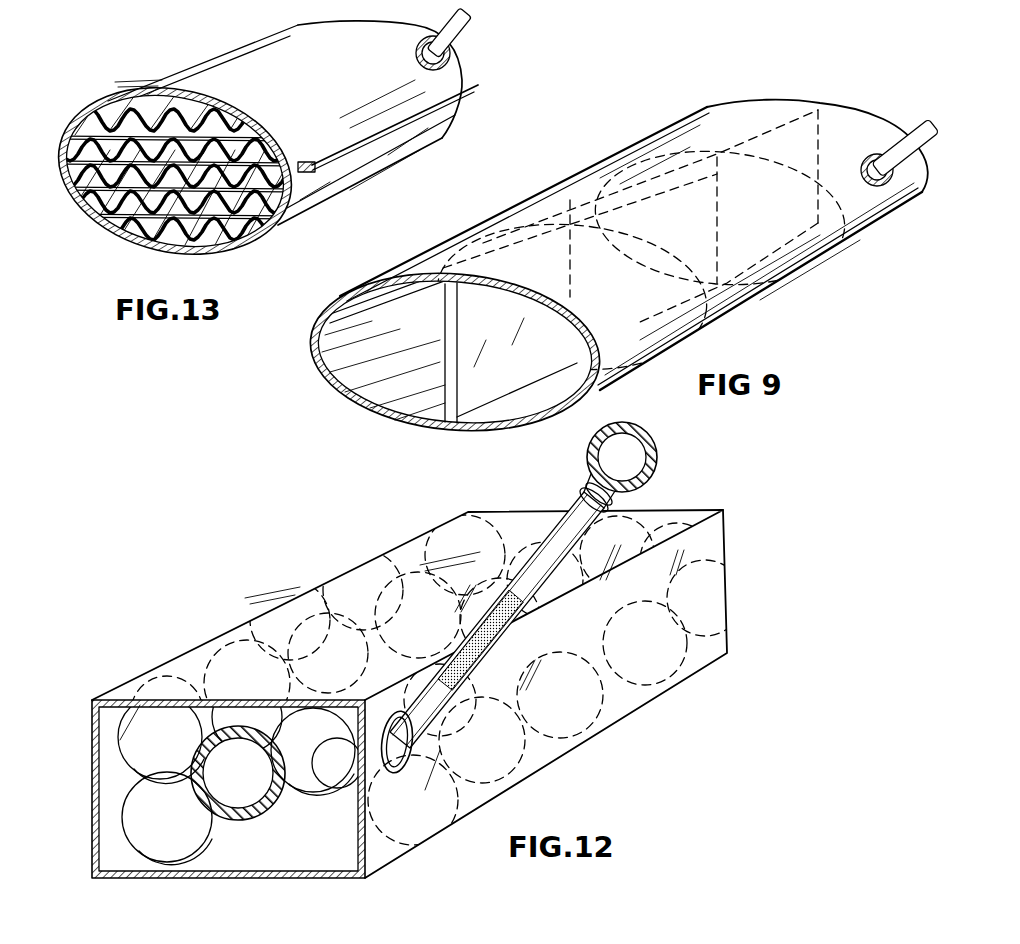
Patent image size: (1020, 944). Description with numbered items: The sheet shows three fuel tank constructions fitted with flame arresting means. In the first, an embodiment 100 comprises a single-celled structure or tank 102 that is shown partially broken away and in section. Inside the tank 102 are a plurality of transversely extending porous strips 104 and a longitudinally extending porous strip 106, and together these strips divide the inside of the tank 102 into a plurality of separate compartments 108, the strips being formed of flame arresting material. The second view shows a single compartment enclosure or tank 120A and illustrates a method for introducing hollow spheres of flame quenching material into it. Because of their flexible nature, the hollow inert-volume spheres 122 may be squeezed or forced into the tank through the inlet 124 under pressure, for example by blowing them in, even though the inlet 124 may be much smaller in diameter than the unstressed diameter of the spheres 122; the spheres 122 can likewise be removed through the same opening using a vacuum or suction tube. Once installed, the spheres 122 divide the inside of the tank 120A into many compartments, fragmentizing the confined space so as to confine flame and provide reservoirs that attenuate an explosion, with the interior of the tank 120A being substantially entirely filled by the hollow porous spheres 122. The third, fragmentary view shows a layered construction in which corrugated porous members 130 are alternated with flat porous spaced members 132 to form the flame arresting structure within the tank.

In FIG. 9, the embodiment 100 is at (341, 407).
In FIG. 9, the tank 102 is at (770, 302).
In FIG. 9, the transversely extending porous strips 104 is at (523, 227).
In FIG. 9, the longitudinally extending porous strip 106 is at (432, 407).
In FIG. 9, the compartments 108 is at (408, 379).
In FIG. 12, the tank 120A is at (737, 552).
In FIG. 12, the hollow inert-volume spheres 122 is at (660, 457).
In FIG. 12, the inlet 124 is at (528, 536).
In FIG. 13, the corrugated porous members 130 is at (262, 222).
In FIG. 13, the flat porous spaced members 132 is at (102, 135).